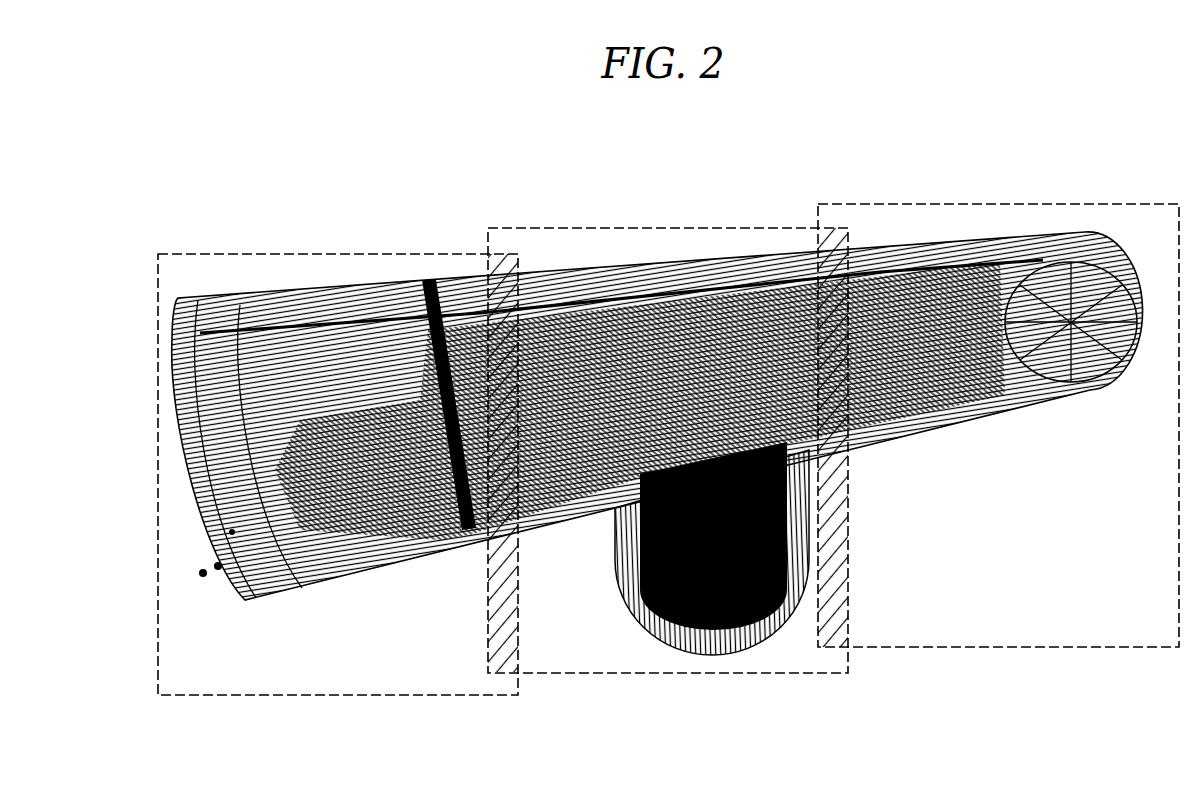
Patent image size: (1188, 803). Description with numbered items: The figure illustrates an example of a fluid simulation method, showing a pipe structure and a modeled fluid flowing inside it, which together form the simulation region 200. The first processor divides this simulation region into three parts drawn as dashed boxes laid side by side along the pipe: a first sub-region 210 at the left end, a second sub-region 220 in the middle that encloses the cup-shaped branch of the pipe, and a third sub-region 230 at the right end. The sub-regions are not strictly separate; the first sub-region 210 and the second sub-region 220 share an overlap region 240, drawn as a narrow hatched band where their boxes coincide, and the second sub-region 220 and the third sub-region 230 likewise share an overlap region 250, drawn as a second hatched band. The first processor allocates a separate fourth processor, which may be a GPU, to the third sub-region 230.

The three-dimensional model of device 200 is at (223, 277).
The first sub-region 210 is at (390, 254).
The second sub-region 220 is at (721, 228).
The third sub-region 230 is at (1103, 204).
The overlap region 240 is at (498, 254).
The overlap region 250 is at (828, 228).